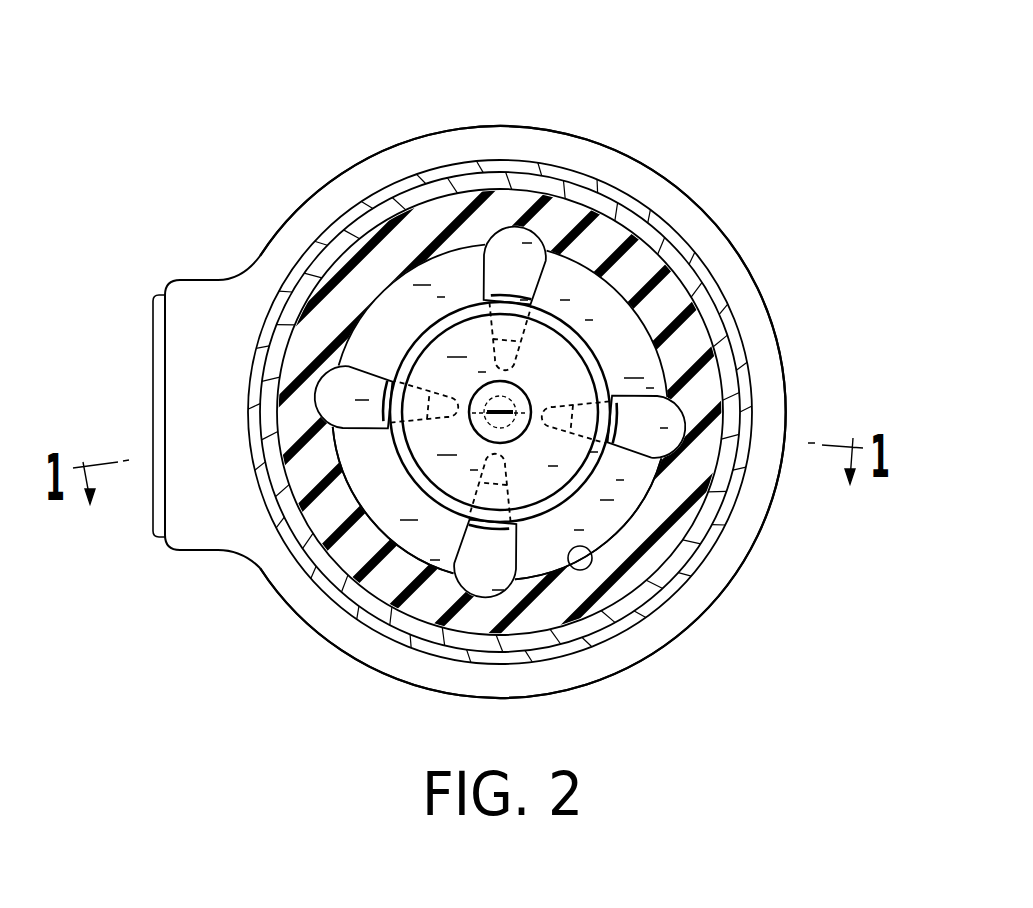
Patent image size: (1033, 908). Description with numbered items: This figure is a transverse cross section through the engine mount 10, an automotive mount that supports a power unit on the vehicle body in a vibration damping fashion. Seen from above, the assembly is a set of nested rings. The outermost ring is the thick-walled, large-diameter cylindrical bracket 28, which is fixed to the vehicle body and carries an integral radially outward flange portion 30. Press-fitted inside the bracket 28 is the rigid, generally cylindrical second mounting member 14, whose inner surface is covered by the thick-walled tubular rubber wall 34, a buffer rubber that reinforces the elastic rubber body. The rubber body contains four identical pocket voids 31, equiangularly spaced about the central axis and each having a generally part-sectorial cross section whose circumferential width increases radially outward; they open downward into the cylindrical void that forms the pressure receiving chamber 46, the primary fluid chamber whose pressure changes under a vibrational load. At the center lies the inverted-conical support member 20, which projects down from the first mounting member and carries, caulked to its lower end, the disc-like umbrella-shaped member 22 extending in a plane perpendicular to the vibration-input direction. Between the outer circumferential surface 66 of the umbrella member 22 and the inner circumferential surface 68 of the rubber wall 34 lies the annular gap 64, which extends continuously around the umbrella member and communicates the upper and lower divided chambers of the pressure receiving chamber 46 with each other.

The engine mount 10 is at (658, 128).
The second mounting member 14 is at (700, 582).
The support member 20 is at (522, 388).
The umbrella-shaped member 22 is at (572, 370).
The bracket 28 is at (393, 633).
The flange portion 30 is at (613, 663).
The pocket voids 31 is at (483, 262).
The tubular rubber wall 34 is at (430, 215).
The pressure receiving chamber 46 is at (370, 477).
The annular gap 64 is at (331, 549).
The outer circumferential surface 66 is at (598, 513).
The inner circumferential surface 68 is at (578, 570).